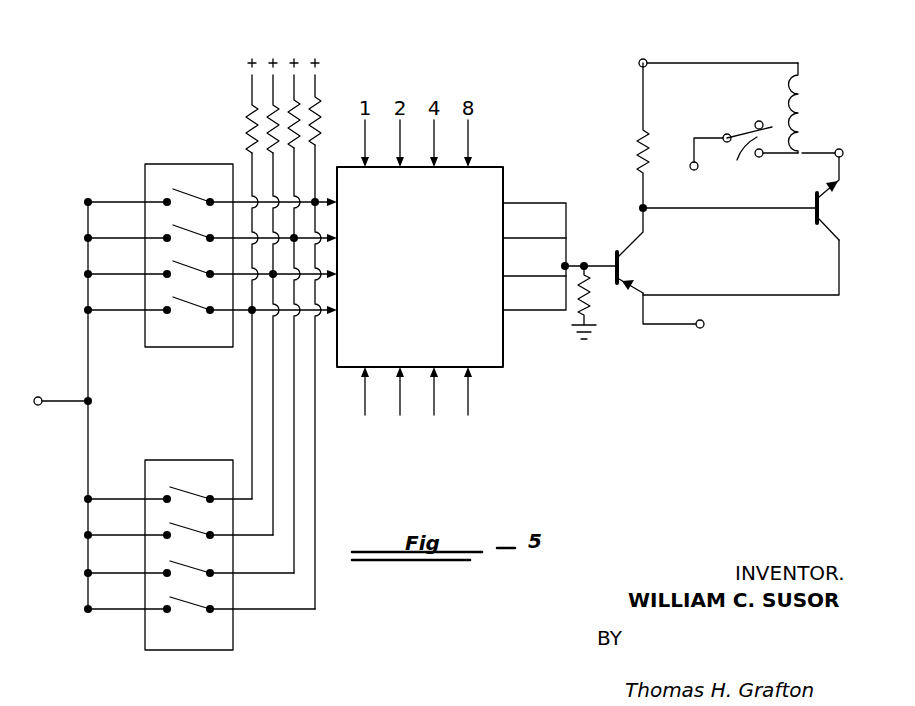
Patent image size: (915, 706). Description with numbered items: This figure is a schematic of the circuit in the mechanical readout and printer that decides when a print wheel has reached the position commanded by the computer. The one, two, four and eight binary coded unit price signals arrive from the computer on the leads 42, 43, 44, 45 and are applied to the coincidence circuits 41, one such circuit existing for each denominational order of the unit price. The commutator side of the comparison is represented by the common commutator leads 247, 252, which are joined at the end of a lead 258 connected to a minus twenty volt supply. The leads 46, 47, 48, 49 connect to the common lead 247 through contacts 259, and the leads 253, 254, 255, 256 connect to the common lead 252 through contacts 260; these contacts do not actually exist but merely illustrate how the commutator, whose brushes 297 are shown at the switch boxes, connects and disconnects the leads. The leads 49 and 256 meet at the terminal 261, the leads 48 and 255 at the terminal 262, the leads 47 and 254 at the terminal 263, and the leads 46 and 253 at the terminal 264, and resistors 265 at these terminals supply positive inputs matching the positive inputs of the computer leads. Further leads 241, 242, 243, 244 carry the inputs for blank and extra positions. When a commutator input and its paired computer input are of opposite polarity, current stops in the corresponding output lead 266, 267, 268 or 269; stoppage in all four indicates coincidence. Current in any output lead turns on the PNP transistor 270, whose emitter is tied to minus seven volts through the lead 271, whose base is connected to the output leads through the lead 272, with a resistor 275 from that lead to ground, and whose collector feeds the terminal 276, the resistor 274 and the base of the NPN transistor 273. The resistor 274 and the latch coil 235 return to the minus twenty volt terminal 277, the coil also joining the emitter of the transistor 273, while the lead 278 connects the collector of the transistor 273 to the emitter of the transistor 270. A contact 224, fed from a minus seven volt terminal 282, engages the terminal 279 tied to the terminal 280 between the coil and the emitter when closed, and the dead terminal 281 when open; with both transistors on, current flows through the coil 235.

The coincidence circuits 41 is at (420, 267).
The lead 42 is at (368, 148).
The lead 43 is at (402, 148).
The lead 44 is at (436, 148).
The lead 45 is at (470, 147).
The lead 46 is at (236, 307).
The lead 47 is at (236, 271).
The lead 48 is at (236, 235).
The lead 49 is at (236, 199).
The contact 224 is at (739, 163).
The latch coil 235 is at (803, 93).
The lead 241 is at (365, 403).
The lead 242 is at (400, 403).
The lead 243 is at (435, 402).
The lead 244 is at (470, 403).
The common commutator lead 247 is at (88, 292).
The common commutator lead 252 is at (88, 550).
The lead 253 is at (240, 496).
The lead 254 is at (242, 533).
The lead 255 is at (240, 571).
The lead 256 is at (249, 607).
The lead 258 is at (64, 405).
The contacts 259 is at (166, 189).
The contacts 260 is at (168, 491).
The terminal 261 is at (320, 200).
The terminal 262 is at (296, 237).
The terminal 263 is at (277, 277).
The terminal 264 is at (250, 318).
The resistors 265 is at (251, 128).
The output lead 266 is at (560, 199).
The output lead 267 is at (558, 235).
The output lead 268 is at (558, 272).
The output lead 269 is at (559, 308).
The PNP transistor 270 is at (624, 259).
The lead 271 is at (670, 327).
The lead 272 is at (573, 263).
The NPN transistor 273 is at (824, 210).
The resistor 274 is at (636, 142).
The resistor 275 is at (603, 300).
The terminal 276 is at (646, 212).
The terminal 277 is at (640, 67).
The lead 278 is at (788, 297).
The terminal 279 is at (763, 157).
The terminal 280 is at (843, 150).
The dead terminal 281 is at (757, 120).
The terminal 282 is at (690, 163).
The brushes 297 is at (187, 158).